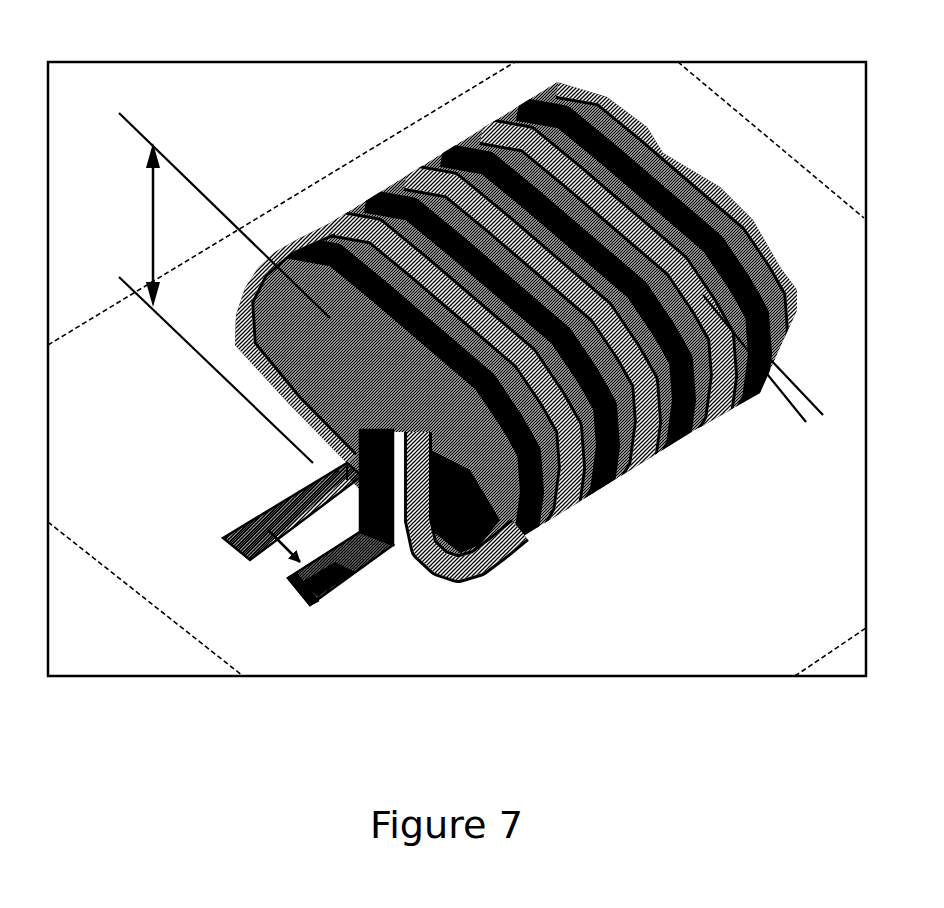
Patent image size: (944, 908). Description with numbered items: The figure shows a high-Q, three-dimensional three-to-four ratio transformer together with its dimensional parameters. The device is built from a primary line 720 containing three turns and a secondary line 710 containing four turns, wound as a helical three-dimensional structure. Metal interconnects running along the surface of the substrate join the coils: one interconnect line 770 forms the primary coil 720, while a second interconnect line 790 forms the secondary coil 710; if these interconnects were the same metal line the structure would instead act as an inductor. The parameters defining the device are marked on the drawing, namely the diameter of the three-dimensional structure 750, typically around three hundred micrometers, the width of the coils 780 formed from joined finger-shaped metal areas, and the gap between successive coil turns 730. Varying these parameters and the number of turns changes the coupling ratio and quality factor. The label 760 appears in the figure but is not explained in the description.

The secondary line 710 is at (553, 530).
The primary line 720 is at (473, 580).
The gap between successive coil turns 730 is at (842, 362).
The diameter of the three-dimensional structure 750 is at (196, 288).
The substrate 760 is at (457, 369).
The interconnect line 770 is at (262, 495).
The width of the coils 780 is at (328, 597).
The second interconnect line 790 is at (295, 593).